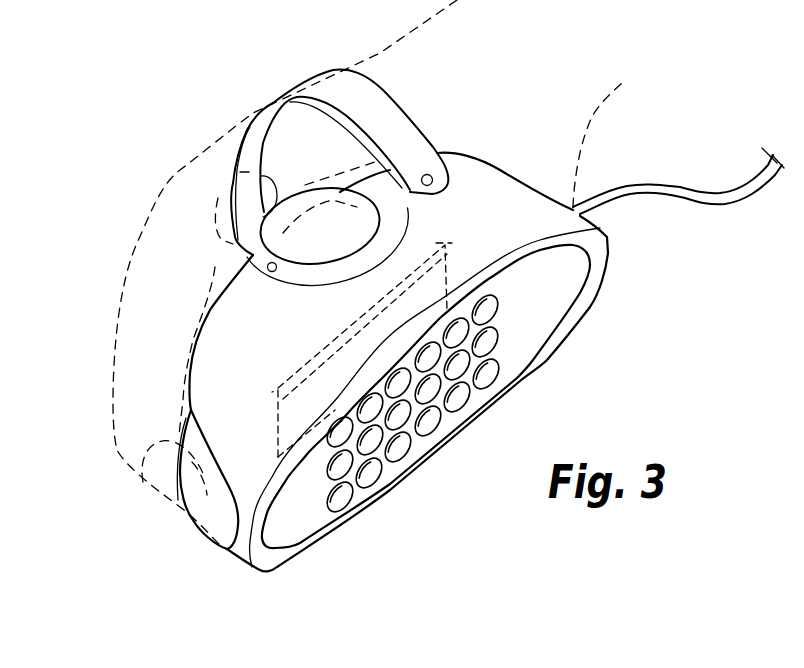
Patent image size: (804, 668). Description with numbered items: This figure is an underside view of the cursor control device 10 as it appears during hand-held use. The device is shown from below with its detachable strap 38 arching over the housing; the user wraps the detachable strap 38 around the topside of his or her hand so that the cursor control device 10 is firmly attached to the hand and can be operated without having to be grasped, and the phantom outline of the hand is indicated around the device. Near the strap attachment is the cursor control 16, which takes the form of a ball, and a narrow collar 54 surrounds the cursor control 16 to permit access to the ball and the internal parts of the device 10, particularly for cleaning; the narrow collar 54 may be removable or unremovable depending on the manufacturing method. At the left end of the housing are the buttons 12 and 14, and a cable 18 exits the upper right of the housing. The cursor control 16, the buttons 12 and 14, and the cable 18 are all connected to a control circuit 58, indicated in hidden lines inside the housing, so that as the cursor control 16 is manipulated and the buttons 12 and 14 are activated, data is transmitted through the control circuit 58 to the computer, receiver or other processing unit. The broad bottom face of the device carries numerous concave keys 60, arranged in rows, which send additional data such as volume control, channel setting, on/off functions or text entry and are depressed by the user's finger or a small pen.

The cursor control device 10 is at (104, 76).
The button 12 is at (213, 505).
The button 14 is at (207, 535).
The cursor control 16 is at (345, 226).
The cable 18 is at (728, 199).
The detachable strap 38 is at (380, 112).
The narrow collar 54 is at (287, 278).
The control circuit 58 is at (300, 405).
The concave keys 60 is at (489, 378).